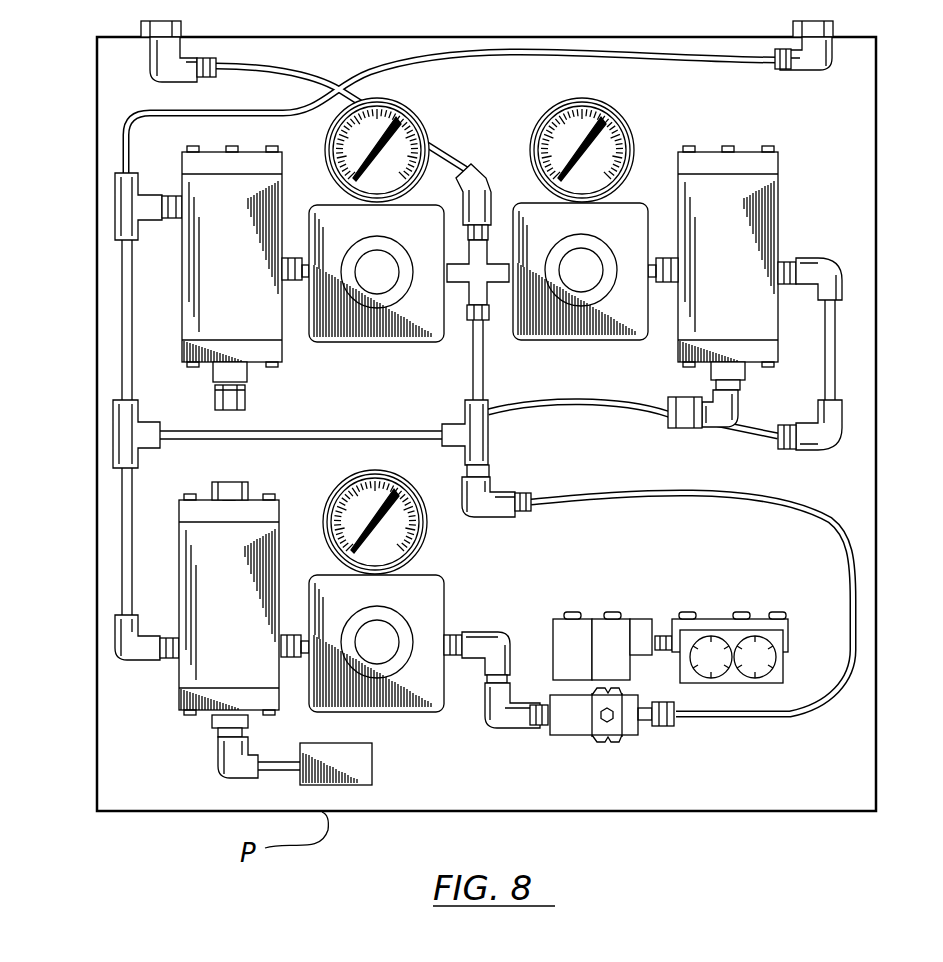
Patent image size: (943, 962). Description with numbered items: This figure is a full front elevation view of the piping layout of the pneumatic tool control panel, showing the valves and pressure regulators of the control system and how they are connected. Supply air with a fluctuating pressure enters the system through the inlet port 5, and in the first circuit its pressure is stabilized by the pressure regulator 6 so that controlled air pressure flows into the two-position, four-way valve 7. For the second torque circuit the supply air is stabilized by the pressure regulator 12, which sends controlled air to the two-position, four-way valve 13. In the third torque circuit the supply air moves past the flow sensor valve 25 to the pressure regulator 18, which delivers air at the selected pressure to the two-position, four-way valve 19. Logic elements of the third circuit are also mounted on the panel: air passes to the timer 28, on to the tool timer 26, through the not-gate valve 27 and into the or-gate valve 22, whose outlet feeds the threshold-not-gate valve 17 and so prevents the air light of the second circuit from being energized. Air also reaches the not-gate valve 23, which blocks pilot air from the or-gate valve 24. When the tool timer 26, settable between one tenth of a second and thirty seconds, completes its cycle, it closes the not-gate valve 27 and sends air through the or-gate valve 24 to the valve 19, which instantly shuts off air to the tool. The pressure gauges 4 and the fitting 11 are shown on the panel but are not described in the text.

The pressure gauge 4 is at (395, 100).
The inlet port 5 is at (183, 28).
The pressure regulator 6 is at (340, 343).
The 2-position/4-way valve 7 is at (183, 250).
The inlet fitting 11 is at (793, 28).
The pressure regulator 12 is at (600, 343).
The 2-position/4-way valve 13 is at (740, 150).
The threshold-not-gate valve 17 is at (583, 612).
The pressure regulator 18 is at (445, 683).
The 2-position/4-way valve 19 is at (208, 712).
The or-gate valve 22 is at (640, 618).
The not-gate valve 23 is at (612, 612).
The or-gate valve 24 is at (372, 765).
The flow sensor valve 25 is at (640, 736).
The tool timer 26 is at (741, 659).
The not-gate valve 27 is at (735, 812).
The timer 28 is at (733, 683).